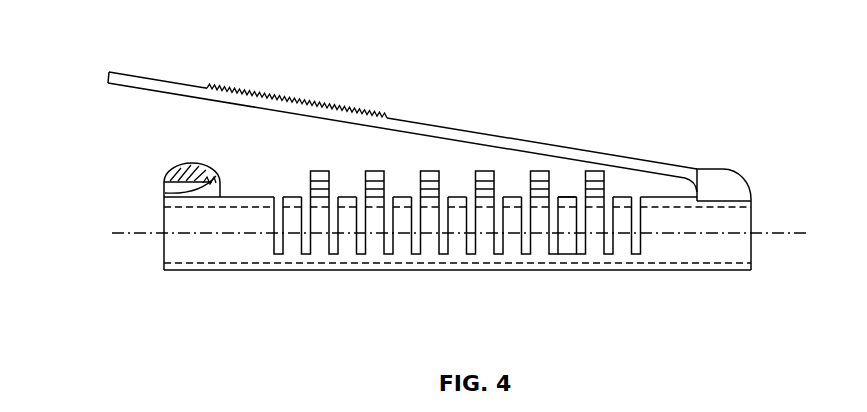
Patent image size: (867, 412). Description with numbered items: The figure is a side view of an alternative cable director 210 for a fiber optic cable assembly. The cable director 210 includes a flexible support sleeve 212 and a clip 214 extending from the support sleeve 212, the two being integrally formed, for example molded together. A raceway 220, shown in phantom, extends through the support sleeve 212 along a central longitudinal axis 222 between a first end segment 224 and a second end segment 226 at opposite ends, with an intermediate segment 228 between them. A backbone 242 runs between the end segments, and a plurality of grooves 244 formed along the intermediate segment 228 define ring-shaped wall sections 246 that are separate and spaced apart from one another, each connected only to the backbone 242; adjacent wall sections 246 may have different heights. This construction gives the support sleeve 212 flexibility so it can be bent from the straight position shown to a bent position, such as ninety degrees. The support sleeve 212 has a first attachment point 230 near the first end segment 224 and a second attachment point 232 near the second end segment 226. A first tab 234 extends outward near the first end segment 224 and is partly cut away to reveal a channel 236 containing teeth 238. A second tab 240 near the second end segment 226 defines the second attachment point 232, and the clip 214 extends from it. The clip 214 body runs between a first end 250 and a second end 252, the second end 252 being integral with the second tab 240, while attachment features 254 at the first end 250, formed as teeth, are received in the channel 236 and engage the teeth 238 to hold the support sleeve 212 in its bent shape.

The cable director 210 is at (587, 62).
The support sleeve 212 is at (689, 247).
The clip 214 is at (491, 140).
The raceway 220 is at (178, 240).
The central longitudinal axis 222 is at (778, 236).
The first end segment 224 is at (205, 273).
The second end segment 226 is at (720, 273).
The intermediate segment 228 is at (387, 273).
The first attachment point 230 is at (188, 177).
The second attachment point 232 is at (711, 166).
The first tab 234 is at (201, 178).
The channel 236 is at (220, 190).
The teeth 238 is at (165, 191).
The second tab 240 is at (734, 189).
The backbone 242 is at (520, 258).
The grooves 244 is at (556, 190).
The wall sections 246 is at (567, 212).
The first end 250 is at (108, 78).
The second end 252 is at (683, 181).
The attachment features 254 is at (264, 96).